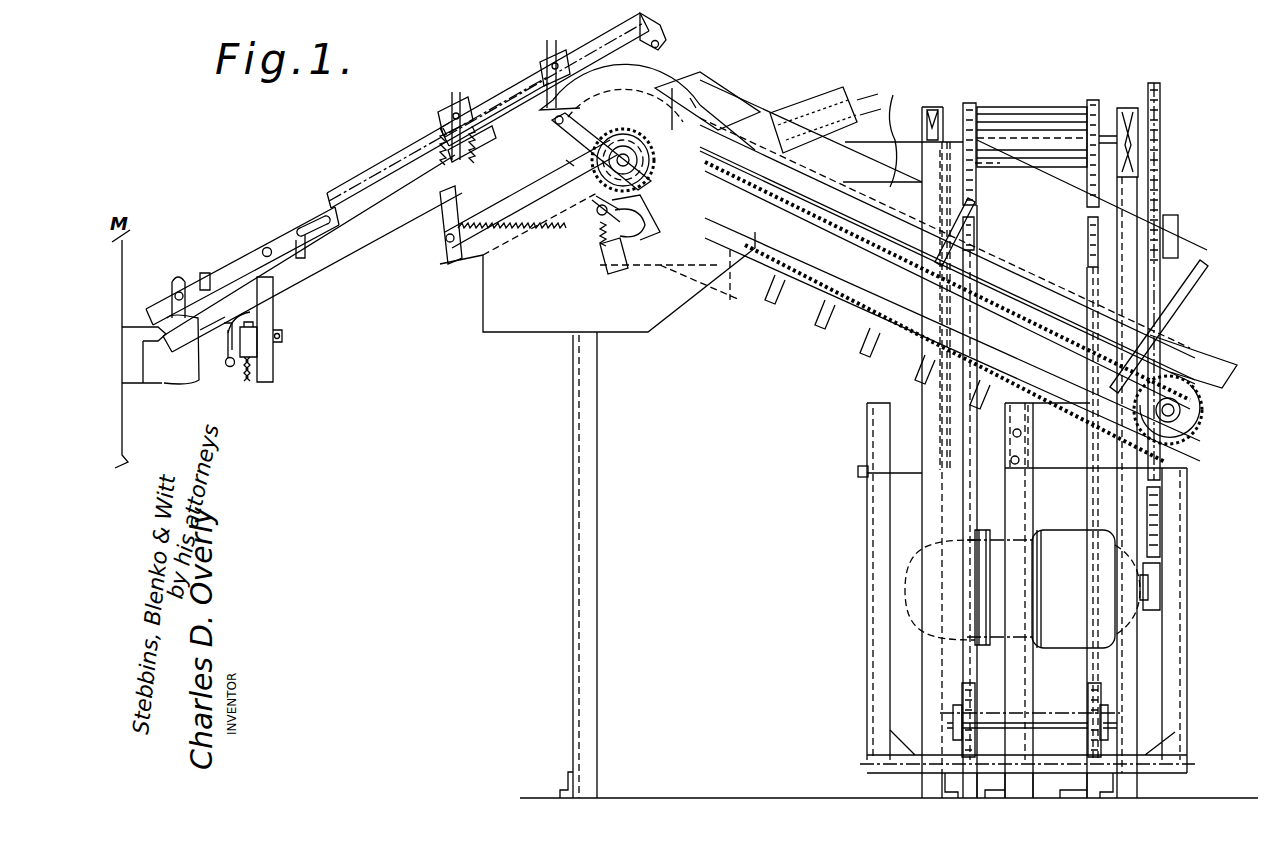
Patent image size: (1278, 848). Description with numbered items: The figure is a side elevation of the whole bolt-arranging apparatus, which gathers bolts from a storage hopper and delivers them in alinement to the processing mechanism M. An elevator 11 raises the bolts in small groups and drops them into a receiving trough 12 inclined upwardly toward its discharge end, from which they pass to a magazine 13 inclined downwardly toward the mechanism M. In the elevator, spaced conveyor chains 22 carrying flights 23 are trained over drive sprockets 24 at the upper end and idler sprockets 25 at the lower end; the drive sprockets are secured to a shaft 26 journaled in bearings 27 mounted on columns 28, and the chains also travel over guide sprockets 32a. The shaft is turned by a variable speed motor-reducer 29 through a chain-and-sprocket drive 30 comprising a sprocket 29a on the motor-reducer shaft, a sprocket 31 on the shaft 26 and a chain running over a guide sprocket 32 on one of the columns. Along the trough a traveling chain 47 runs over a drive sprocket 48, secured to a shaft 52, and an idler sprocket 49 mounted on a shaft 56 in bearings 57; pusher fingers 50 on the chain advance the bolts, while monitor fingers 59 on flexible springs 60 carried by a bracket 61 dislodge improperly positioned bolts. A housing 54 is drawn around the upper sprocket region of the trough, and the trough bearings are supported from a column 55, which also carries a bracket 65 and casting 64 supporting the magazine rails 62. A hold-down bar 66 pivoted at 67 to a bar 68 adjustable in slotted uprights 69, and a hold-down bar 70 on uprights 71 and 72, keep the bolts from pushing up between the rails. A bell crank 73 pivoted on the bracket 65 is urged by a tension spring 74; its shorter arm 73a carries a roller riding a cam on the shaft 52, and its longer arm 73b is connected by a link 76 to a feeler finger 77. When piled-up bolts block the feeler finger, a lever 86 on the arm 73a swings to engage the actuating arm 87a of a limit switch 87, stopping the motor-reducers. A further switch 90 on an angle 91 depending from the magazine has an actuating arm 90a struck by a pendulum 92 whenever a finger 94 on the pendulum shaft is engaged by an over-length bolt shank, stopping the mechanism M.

The elevator 11 is at (1058, 112).
The receiving trough 12 is at (912, 94).
The magazine 13 is at (322, 258).
The conveyor chains 22 is at (1085, 212).
The flights 23 is at (1020, 114).
The drive sprockets 24 is at (979, 104).
The idler sprockets 25 is at (1090, 695).
The shaft 26 is at (1108, 130).
The bearings 27 is at (932, 112).
The columns 28 is at (1150, 208).
The variable speed motor-reducer 29 is at (1050, 545).
The sprocket 29a is at (1160, 592).
The chain-and-sprocket drive 30 is at (1160, 530).
The sprocket 31 is at (1162, 123).
The guide sprocket 32 is at (1178, 243).
The guide sprockets 32a is at (1188, 315).
The traveling chain 47 is at (822, 256).
The drive sprocket 48 is at (624, 140).
The idler sprocket 49 is at (1180, 411).
The pusher fingers 50 is at (858, 258).
The shaft 52 is at (636, 224).
The conveyor housing 54 is at (650, 107).
The column 55 is at (597, 550).
The shaft 56 is at (1185, 428).
The bearings 57 is at (1192, 395).
The monitor fingers 59 is at (760, 140).
The flexible springs 60 is at (808, 135).
The bracket 61 is at (840, 105).
The rails 62 is at (425, 228).
The casting 64 is at (531, 194).
The bracket 65 is at (528, 240).
The hold-down bar 66 is at (432, 165).
The pivot 67 is at (662, 45).
The bar 68 is at (512, 82).
The slotted uprights 69 is at (452, 102).
The hold-down bar 70 is at (268, 247).
The upright 71 is at (184, 283).
The upright 72 is at (301, 226).
The bell crank 73 is at (596, 196).
The shorter arm 73a is at (638, 240).
The longer arm 73b is at (554, 155).
The tension spring 74 is at (530, 211).
The link 76 is at (550, 176).
The feeler finger 77 is at (480, 170).
The lever 86 is at (596, 214).
The limit switch 87 is at (598, 246).
The actuating arm 87a is at (624, 262).
The switch 90 is at (257, 332).
The actuating arm 90a is at (248, 380).
The angle 91 is at (276, 362).
The pendulum 92 is at (228, 345).
The finger 94 is at (250, 314).